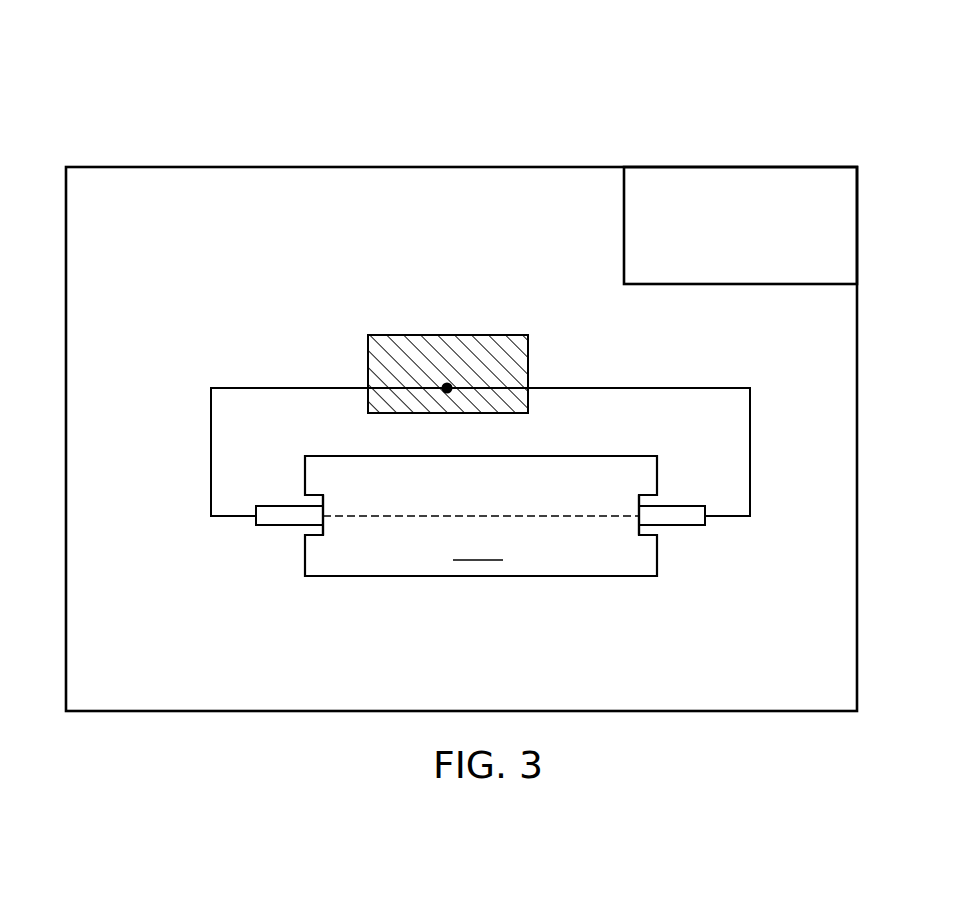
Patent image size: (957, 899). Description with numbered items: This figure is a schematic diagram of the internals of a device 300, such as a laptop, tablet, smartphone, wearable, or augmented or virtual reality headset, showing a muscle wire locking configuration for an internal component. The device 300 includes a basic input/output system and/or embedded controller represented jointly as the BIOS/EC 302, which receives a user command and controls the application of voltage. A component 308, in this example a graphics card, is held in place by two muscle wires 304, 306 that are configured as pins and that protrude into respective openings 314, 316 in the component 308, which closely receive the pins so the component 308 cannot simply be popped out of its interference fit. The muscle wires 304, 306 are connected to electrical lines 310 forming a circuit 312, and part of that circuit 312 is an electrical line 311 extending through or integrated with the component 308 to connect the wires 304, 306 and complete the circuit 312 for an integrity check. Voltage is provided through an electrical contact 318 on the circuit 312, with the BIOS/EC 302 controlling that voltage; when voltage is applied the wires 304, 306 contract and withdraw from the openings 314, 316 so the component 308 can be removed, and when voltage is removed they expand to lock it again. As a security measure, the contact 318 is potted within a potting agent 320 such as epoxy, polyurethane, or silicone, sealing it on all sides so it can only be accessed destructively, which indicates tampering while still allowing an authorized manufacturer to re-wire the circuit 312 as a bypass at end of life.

The device 300 is at (752, 52).
The BIOS/EC 302 is at (740, 166).
The muscle wire 304 is at (264, 527).
The muscle wire 306 is at (699, 527).
The component 308 is at (481, 531).
The electrical lines 310 is at (211, 452).
The electrical line 311 is at (482, 513).
The circuit 312 is at (481, 431).
The opening 314 is at (323, 502).
The opening 316 is at (639, 502).
The electrical contact 318 is at (452, 384).
The potting agent 320 is at (447, 335).